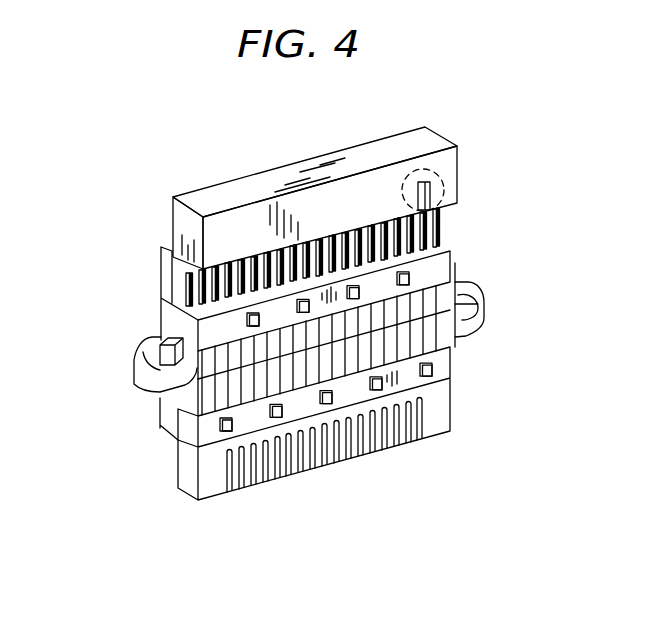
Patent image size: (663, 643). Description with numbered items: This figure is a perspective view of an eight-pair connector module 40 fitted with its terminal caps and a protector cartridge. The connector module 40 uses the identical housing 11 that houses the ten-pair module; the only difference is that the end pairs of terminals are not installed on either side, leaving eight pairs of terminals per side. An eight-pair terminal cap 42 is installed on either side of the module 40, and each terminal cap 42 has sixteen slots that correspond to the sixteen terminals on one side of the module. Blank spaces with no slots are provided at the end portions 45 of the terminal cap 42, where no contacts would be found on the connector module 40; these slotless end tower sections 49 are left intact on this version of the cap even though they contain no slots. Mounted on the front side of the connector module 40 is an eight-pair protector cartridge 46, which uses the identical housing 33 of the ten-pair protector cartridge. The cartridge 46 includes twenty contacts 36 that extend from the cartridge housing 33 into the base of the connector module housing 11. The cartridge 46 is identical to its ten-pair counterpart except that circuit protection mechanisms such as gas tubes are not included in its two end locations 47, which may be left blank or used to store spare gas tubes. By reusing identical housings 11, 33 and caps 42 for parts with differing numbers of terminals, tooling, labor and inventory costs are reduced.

The housing 11 is at (150, 322).
The housing 33 is at (173, 215).
The terminal pins 36 is at (435, 231).
The 8-pair connector module 40 is at (210, 408).
The 8-pair terminal cap 42 is at (460, 249).
The end portions 45 is at (441, 448).
The 8-pair protector cartridge 46 is at (336, 140).
The end locations 47 is at (442, 172).
The end tower sections 49 is at (442, 407).